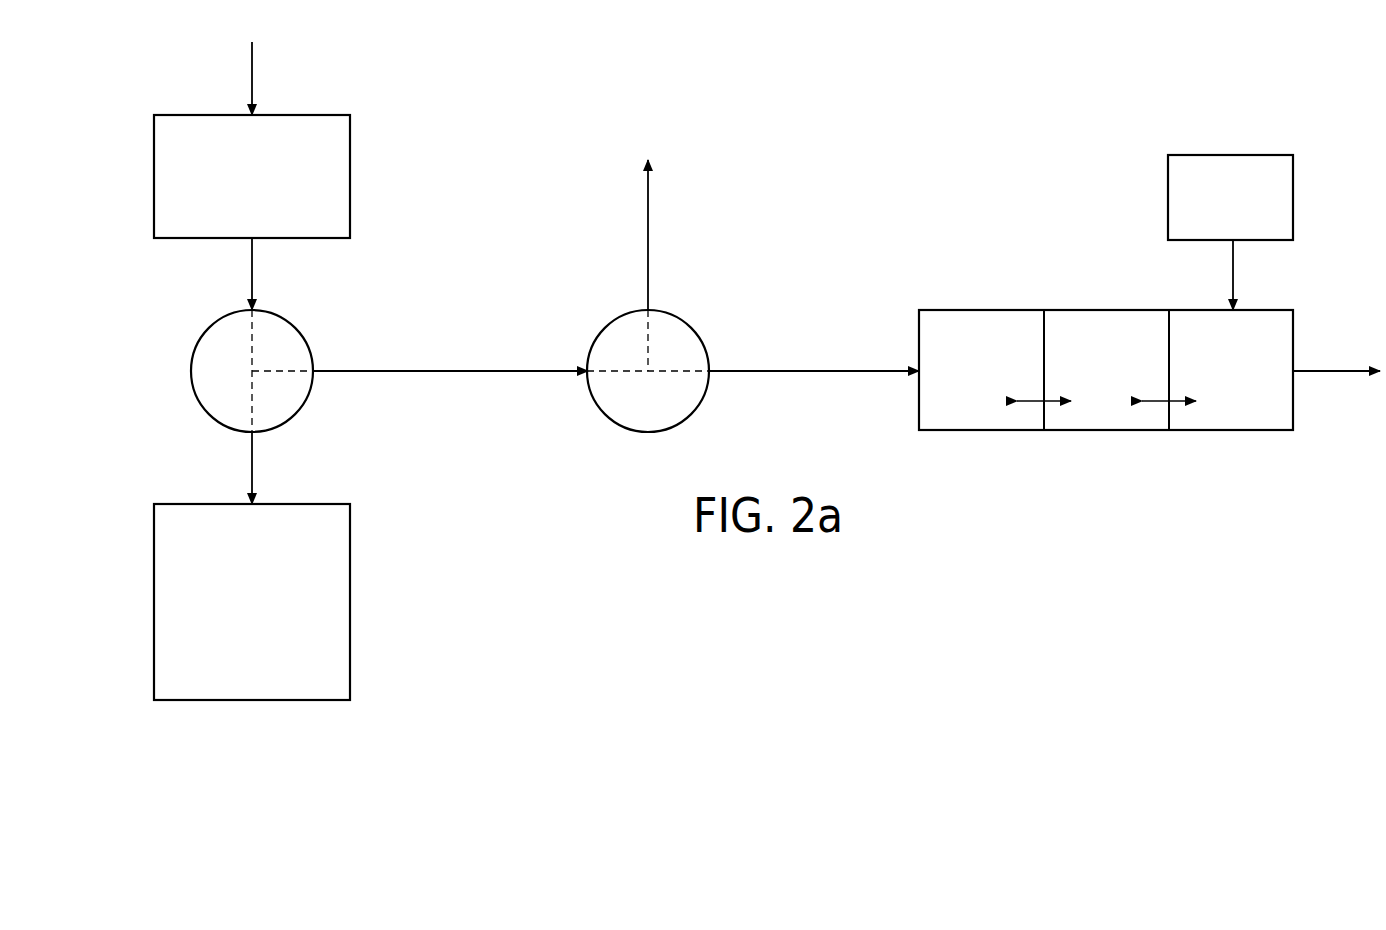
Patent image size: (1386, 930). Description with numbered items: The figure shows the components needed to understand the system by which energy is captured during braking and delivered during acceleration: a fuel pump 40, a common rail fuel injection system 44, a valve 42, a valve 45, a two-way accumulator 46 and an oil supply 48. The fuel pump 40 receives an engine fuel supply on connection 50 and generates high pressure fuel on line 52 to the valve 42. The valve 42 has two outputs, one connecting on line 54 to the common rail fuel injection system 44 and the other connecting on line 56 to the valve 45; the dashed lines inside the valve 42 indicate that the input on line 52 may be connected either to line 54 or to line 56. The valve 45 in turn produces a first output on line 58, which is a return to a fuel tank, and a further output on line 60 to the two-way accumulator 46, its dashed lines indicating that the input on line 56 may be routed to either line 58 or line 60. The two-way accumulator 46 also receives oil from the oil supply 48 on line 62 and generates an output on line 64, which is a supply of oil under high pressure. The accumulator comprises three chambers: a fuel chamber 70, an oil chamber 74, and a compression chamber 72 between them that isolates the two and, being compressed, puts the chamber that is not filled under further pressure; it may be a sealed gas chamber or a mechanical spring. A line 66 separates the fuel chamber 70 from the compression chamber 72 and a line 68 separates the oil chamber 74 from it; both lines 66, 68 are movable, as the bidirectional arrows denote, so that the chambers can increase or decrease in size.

The fuel pump 40 is at (351, 180).
The valve 42 is at (205, 413).
The common rail fuel injection system 44 is at (351, 600).
The valve 45 is at (603, 413).
The two-way accumulator 46 is at (918, 401).
The oil supply 48 is at (1167, 193).
The connection 50 is at (324, 78).
The line 52 is at (324, 274).
The line 54 is at (236, 468).
The line 56 is at (450, 356).
The line 58 is at (678, 235).
The line 60 is at (814, 356).
The line 62 is at (1217, 275).
The line 64 is at (1336, 360).
The line 66 is at (1046, 370).
The line 68 is at (1164, 370).
The fuel chamber 70 is at (980, 424).
The compression chamber 72 is at (1105, 318).
The oil chamber 74 is at (1230, 424).